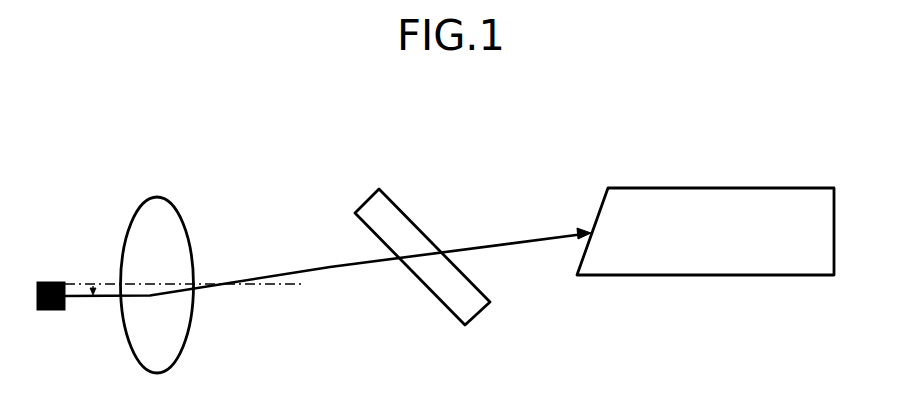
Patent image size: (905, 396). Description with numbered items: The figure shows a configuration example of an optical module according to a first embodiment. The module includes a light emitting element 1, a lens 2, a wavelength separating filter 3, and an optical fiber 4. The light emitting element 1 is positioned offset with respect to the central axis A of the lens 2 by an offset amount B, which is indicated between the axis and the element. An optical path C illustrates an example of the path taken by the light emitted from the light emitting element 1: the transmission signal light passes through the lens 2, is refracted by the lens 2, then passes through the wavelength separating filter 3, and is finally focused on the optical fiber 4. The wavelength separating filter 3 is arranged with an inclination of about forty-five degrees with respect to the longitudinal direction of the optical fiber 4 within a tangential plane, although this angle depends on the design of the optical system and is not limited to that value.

The light emitting element 1 is at (51, 282).
The lens 2 is at (157, 197).
The wavelength separating filter 3 is at (363, 205).
The optical fiber 4 is at (668, 188).
The central axis A is at (173, 282).
The offset amount B is at (93, 287).
The optical path C is at (75, 298).